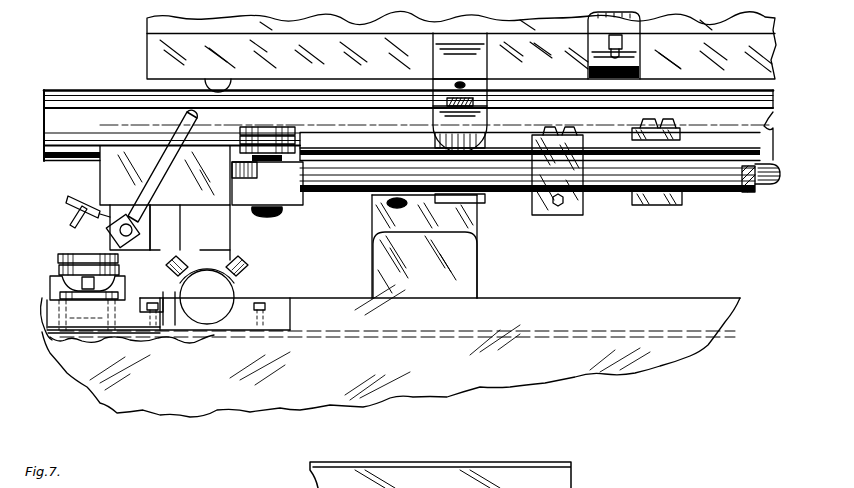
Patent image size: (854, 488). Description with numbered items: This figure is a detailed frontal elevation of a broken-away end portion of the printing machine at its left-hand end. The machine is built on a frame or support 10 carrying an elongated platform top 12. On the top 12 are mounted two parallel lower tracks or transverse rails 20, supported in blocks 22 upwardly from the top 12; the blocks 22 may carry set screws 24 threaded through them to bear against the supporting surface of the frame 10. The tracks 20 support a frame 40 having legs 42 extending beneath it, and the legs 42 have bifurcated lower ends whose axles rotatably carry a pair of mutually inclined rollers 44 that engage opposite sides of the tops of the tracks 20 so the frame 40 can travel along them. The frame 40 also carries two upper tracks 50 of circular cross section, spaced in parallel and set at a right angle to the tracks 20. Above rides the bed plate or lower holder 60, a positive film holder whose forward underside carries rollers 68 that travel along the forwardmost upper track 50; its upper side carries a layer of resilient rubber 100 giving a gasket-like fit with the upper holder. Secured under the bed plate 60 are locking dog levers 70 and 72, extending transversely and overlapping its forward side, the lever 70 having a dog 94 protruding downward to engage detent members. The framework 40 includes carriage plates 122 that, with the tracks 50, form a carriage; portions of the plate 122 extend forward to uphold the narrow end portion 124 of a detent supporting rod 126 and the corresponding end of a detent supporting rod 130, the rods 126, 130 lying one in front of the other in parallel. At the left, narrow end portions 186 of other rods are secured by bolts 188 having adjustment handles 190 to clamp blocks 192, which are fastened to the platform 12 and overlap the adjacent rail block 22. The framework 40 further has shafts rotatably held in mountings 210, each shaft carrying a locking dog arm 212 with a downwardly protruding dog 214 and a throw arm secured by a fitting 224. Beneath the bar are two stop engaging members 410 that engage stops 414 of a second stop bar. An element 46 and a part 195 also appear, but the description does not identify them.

The frame 10 is at (648, 298).
The platform top 12 is at (560, 298).
The lower tracks 20 is at (236, 287).
The blocks 22 is at (175, 330).
The set screws 24 is at (152, 302).
The frame 40 is at (106, 180).
The legs 42 is at (232, 237).
The rollers 44 is at (186, 266).
The lower rail 46 is at (340, 146).
The upper tracks 50 is at (100, 91).
The bed plate 60 is at (145, 35).
The rollers 68 is at (218, 80).
The locking dog lever 70 is at (445, 70).
The locking dog lever 72 is at (635, 30).
The dog 94 is at (606, 39).
The layer of resilient material 100 is at (393, 463).
The carriage plates 122 is at (300, 194).
The narrow end portion 124 is at (230, 180).
The detent supporting rod 126 is at (752, 194).
The detent supporting rod 130 is at (764, 185).
The narrow end portions 186 is at (43, 305).
The bolts 188 is at (82, 284).
The adjustment handles 190 is at (57, 258).
The clamp blocks 192 is at (50, 336).
The fastener 195 is at (104, 316).
The mountings 210 is at (158, 292).
The locking dog arm 212 is at (68, 199).
The dogs 214 is at (70, 222).
The fittings 224 is at (198, 119).
The stop engaging members 410 is at (474, 228).
The stops 414 is at (478, 270).